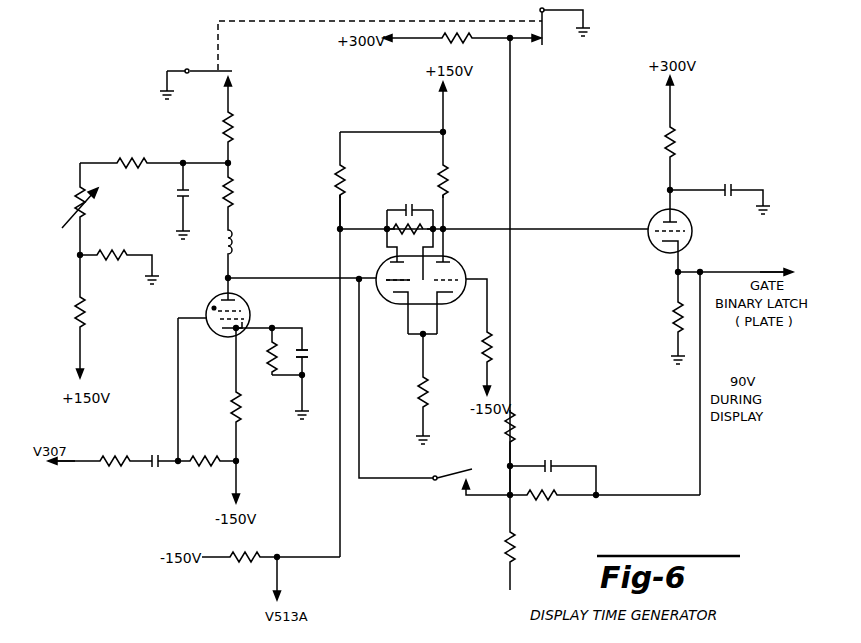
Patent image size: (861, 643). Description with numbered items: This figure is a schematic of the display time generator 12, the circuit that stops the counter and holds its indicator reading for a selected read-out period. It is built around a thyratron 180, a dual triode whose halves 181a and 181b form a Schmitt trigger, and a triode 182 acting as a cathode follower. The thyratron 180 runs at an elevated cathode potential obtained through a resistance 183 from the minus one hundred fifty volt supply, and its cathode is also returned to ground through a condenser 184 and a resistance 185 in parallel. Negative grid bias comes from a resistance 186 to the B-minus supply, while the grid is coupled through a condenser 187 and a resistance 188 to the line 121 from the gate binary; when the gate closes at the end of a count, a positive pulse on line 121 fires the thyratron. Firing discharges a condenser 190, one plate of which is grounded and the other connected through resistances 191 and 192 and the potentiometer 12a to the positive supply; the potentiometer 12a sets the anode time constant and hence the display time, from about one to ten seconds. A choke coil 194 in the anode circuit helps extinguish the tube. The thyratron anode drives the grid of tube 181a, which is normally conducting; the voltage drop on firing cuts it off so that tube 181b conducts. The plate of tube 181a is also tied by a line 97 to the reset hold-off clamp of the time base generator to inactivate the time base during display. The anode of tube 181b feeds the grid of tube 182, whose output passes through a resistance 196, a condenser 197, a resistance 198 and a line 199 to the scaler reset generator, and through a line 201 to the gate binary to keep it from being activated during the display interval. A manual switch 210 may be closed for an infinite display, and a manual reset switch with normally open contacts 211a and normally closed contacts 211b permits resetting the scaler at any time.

The display time generator 12 is at (578, 141).
The variable control potentiometer 12a is at (75, 196).
The line to reset hold-off clamp 97 is at (283, 580).
The line from gate binary 121 is at (70, 462).
The thyratron 180 is at (250, 304).
The dual triode first half 181a is at (401, 303).
The dual triode second half 181b is at (466, 272).
The triode 182 is at (657, 251).
The resistance 183 is at (248, 428).
The condenser 184 is at (306, 348).
The resistance 185 is at (266, 368).
The resistance 186 is at (200, 470).
The condenser 187 is at (151, 470).
The resistance 188 is at (101, 456).
The condenser 190 is at (171, 205).
The resistance 191 is at (128, 159).
The resistance 192 is at (85, 321).
The choke coil 194 is at (241, 240).
The resistance 196 is at (551, 496).
The condenser 197 is at (561, 463).
The resistance 198 is at (505, 551).
The line to scaler reset generator 199 is at (507, 581).
The line to gate binary 201 is at (741, 270).
The manual switch 210 is at (463, 475).
The normally open contacts 211a is at (231, 66).
The normally closed contacts 211b is at (548, 40).